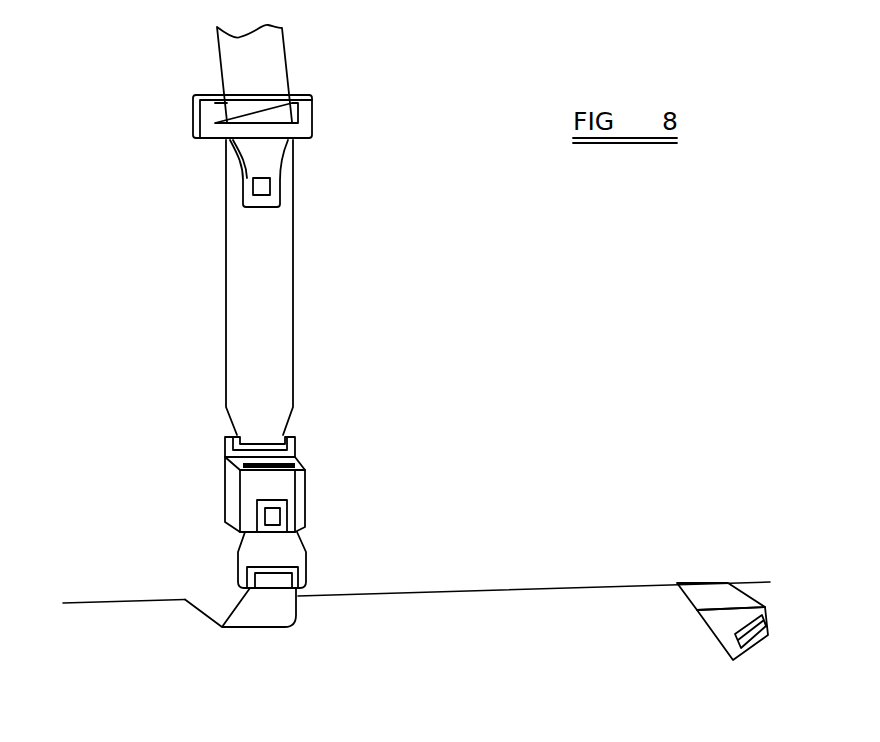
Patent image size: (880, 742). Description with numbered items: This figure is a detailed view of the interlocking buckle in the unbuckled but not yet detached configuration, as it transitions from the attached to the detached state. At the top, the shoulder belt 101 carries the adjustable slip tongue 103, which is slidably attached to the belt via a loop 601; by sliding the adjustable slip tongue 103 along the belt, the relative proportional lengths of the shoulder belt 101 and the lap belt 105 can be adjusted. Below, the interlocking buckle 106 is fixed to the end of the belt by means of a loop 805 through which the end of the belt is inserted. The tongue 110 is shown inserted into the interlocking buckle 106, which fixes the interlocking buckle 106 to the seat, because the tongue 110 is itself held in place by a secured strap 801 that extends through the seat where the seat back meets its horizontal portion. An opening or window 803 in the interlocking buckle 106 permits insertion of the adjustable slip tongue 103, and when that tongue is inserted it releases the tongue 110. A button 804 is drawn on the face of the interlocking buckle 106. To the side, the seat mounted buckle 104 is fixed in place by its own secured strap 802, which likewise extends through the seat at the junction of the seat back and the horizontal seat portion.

The shoulder belt 101 is at (268, 57).
The loop 601 is at (308, 113).
The adjustable (slip) tongue 103 is at (268, 153).
The lap belt 105 is at (277, 288).
The loop 805 is at (225, 443).
The opening (or window) 803 is at (240, 465).
The interlocking buckle 106 is at (275, 478).
The release button 804 is at (243, 537).
The tongue 110 is at (280, 545).
The secured strap 801 is at (265, 597).
The seat mounted buckle 104 is at (732, 613).
The secured strap 802 is at (697, 593).